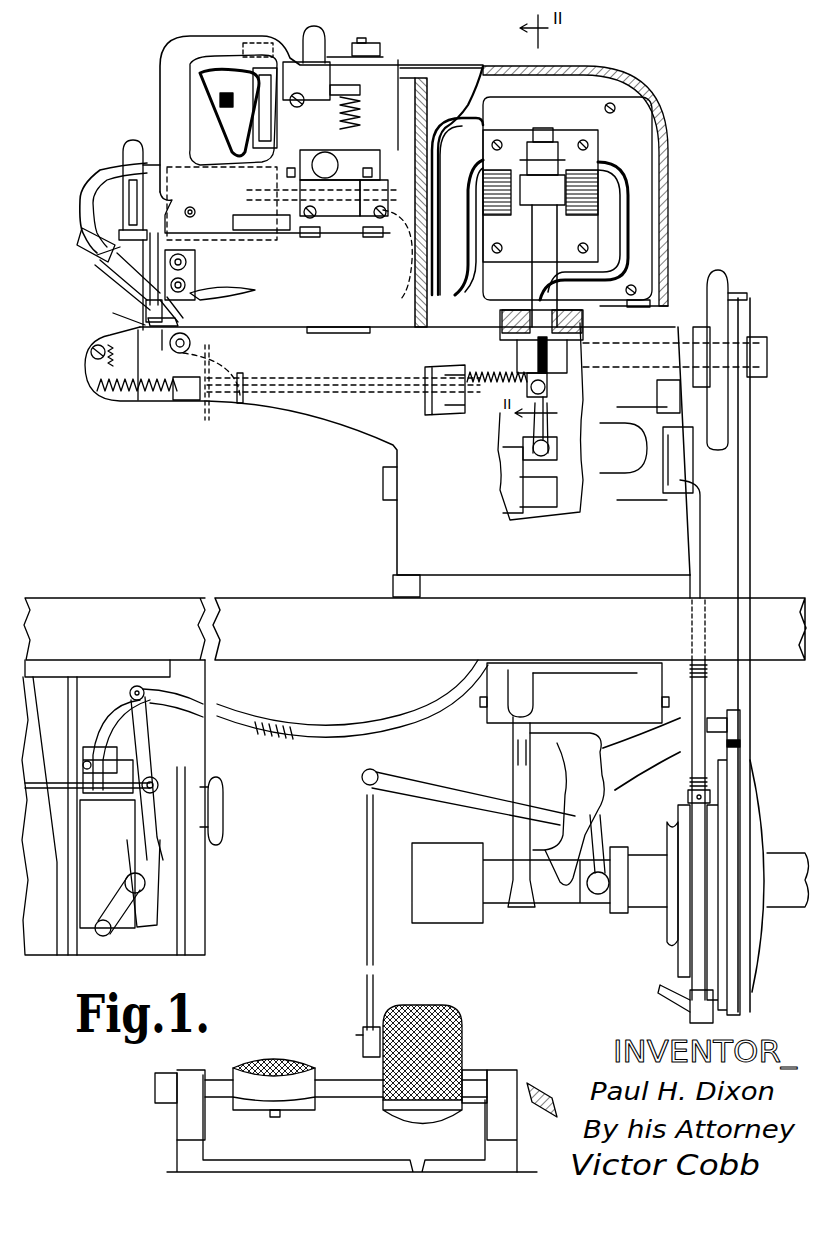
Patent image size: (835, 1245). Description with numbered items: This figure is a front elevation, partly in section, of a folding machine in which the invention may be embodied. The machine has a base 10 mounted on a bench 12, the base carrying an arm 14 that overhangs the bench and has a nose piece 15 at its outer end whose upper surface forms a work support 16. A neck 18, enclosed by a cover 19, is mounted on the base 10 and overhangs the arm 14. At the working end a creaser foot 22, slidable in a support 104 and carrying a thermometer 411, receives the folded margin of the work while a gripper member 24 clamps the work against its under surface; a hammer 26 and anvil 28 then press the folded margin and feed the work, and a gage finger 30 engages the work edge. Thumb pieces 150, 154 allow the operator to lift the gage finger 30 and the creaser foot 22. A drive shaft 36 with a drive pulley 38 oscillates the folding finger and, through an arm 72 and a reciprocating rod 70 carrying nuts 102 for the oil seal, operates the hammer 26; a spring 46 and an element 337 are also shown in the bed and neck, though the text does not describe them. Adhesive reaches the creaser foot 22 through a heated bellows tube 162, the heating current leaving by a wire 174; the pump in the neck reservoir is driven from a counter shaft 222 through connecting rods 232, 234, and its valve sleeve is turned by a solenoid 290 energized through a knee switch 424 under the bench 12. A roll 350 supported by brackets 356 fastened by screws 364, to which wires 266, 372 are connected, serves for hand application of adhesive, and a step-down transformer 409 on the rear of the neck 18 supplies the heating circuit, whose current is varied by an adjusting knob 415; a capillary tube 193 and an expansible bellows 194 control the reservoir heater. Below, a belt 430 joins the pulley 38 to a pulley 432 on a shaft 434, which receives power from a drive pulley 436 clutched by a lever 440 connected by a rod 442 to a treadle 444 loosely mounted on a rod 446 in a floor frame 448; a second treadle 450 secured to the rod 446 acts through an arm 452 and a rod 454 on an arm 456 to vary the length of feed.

The base 10 is at (404, 531).
The bench 12 is at (284, 599).
The arm 14 is at (174, 402).
The nose piece 15 is at (92, 384).
The work support 16 is at (133, 328).
The neck 18 is at (518, 106).
The cover 19 is at (589, 74).
The creaser foot 22 is at (140, 318).
The gripper member 24 is at (113, 313).
The hammer 26 is at (176, 314).
The anvil 28 is at (156, 344).
The gage finger 30 is at (159, 308).
The drive shaft 36 is at (580, 372).
The drive pulley 38 is at (719, 277).
The spring 46 is at (97, 365).
The reciprocating rod 70 is at (204, 408).
The arm 72 is at (548, 411).
The nuts 102 is at (496, 371).
The support 104 is at (112, 273).
The thumb piece 150 is at (207, 296).
The thumb piece 154 is at (246, 288).
The tube 162 is at (96, 177).
The wire 174 is at (80, 211).
The capillary tube 193 is at (332, 62).
The expansible bellows 194 is at (383, 57).
The counter shaft 222 is at (558, 291).
The connecting rod 232 is at (482, 164).
The connecting rod 234 is at (527, 127).
The electric wire 266 is at (288, 234).
The solenoid 290 is at (233, 68).
The arm 337 is at (240, 172).
The roll 350 is at (414, 73).
The bracket 356 is at (486, 181).
The screws 364 is at (365, 238).
The wire 372 is at (398, 255).
The step-down transformer 409 is at (600, 190).
The thermometer 411 is at (129, 141).
The adjusting knob 415 is at (223, 795).
The switch 424 is at (188, 886).
The belt 430 is at (748, 556).
The pulley 432 is at (757, 970).
The shaft 434 is at (787, 858).
The drive pulley 436 is at (668, 940).
The lever 440 is at (453, 782).
The rod 442 is at (370, 953).
The treadle 444 is at (445, 1008).
The rod 446 is at (340, 1081).
The frame 448 is at (180, 1139).
The second treadle 450 is at (283, 1056).
The arm 452 is at (550, 1095).
The rod 454 is at (700, 826).
The arm 456 is at (694, 481).